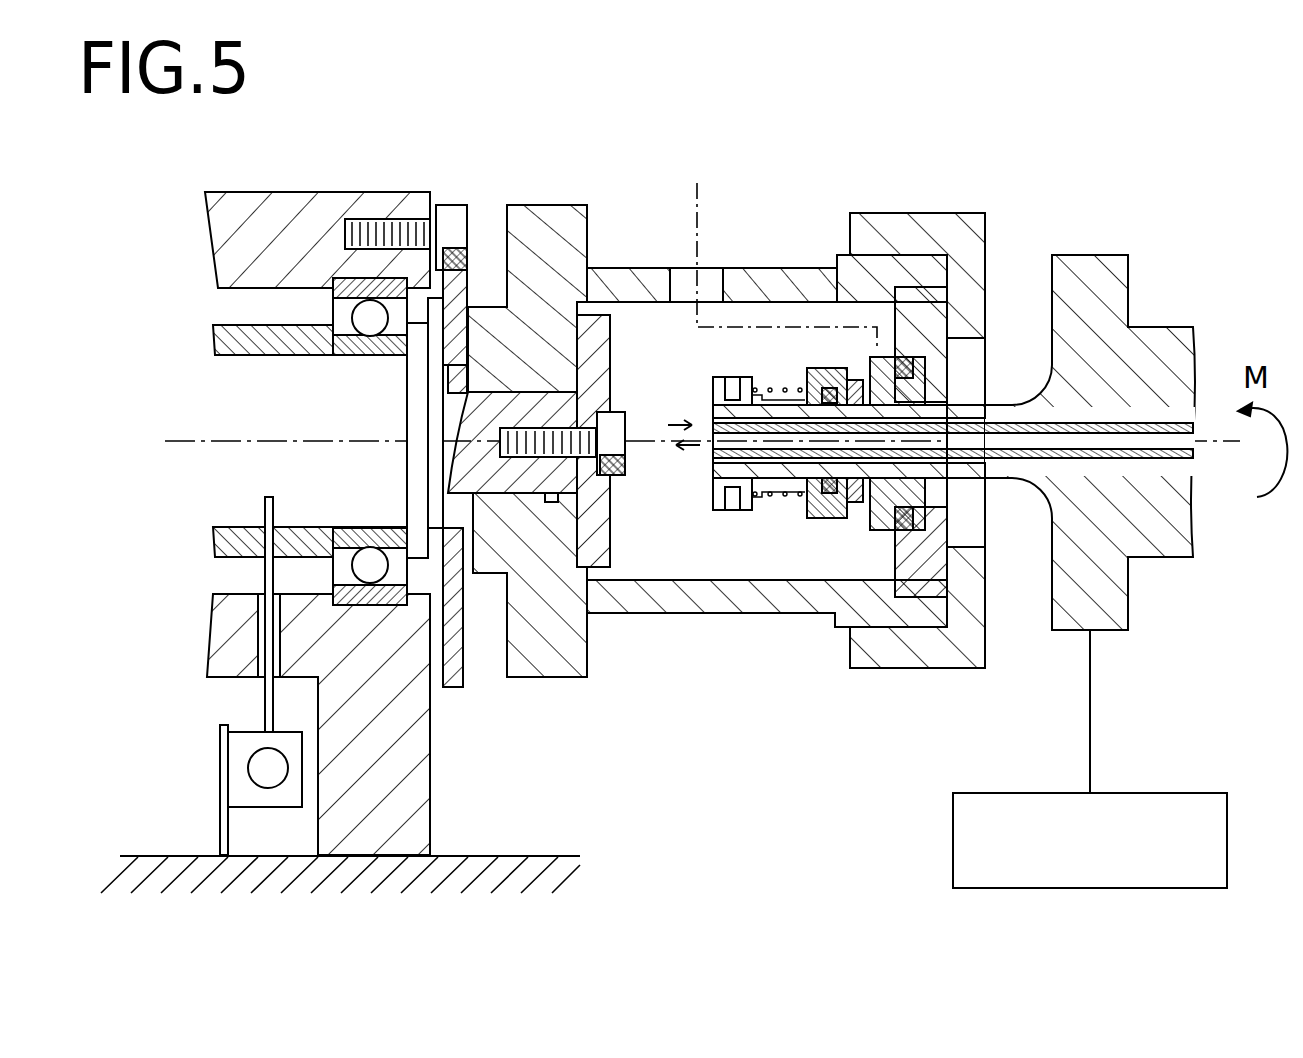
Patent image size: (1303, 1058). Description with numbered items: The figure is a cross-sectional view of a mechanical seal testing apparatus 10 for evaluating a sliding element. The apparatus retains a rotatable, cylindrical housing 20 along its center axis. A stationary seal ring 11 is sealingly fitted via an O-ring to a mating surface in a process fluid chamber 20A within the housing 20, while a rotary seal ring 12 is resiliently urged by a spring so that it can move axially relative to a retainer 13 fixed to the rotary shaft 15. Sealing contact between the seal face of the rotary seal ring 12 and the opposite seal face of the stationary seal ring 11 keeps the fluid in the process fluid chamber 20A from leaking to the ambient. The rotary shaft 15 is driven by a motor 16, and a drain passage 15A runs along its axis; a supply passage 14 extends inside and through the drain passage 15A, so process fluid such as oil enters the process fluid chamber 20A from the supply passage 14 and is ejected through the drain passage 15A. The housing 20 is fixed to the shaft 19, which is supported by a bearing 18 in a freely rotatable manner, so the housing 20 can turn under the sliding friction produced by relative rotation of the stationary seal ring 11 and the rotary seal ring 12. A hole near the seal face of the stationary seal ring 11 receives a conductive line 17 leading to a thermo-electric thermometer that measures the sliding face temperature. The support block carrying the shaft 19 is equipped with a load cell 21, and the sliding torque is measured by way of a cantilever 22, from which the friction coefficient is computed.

The testing apparatus 10 is at (983, 170).
The stationary seal ring 11 is at (888, 362).
The rotary seal ring 12 is at (855, 380).
The retainer 13 is at (785, 388).
The supply passage 14 is at (1138, 462).
The rotary shaft 15 is at (1087, 274).
The drain passage 15A is at (1163, 427).
The motor 16 is at (1228, 828).
The conductive line 17 is at (700, 182).
The bearing 18 is at (360, 318).
The shaft 19 is at (232, 412).
The housing 20 is at (708, 603).
The process fluid chamber 20A is at (787, 560).
The load cell 21 is at (250, 766).
The cantilever 22 is at (264, 700).